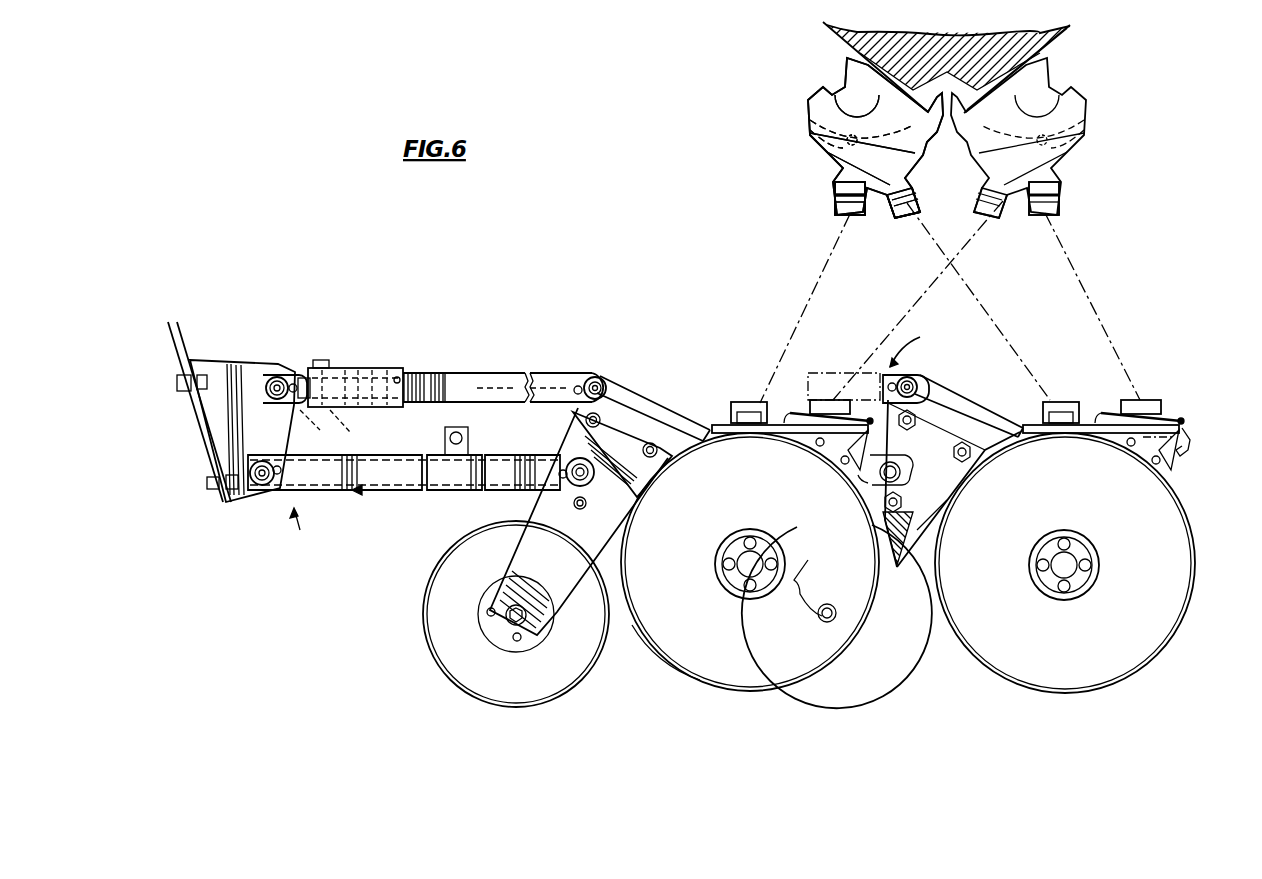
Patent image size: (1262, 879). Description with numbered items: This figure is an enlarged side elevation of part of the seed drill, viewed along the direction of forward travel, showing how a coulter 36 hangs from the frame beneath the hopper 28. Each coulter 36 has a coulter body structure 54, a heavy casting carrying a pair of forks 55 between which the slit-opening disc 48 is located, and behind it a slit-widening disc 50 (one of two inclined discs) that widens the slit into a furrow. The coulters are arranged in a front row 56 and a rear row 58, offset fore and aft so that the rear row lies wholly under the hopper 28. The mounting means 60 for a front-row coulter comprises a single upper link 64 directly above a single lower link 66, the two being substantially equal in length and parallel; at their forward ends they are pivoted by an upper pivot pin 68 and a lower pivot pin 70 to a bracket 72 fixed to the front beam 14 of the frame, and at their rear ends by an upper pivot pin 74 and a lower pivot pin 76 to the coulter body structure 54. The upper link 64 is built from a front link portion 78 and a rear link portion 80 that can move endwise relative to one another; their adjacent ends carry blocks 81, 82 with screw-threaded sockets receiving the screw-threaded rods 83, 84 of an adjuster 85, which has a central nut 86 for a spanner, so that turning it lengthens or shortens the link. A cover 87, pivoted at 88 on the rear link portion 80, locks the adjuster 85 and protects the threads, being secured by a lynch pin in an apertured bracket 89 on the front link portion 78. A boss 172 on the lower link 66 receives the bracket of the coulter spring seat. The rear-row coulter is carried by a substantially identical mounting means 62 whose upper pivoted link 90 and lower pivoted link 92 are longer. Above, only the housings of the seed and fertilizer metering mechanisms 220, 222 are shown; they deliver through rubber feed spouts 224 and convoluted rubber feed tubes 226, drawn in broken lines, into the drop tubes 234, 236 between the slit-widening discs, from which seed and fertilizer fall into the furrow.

The front beam 14 is at (184, 330).
The bracket 72 is at (218, 363).
The upper pivot pin 68 is at (278, 387).
The screw-threaded rod 83 is at (283, 408).
The apertured bracket 89 is at (312, 364).
The cover 87 is at (346, 368).
The central nut 86 is at (362, 368).
The block 82 is at (374, 368).
The adjuster 85 is at (390, 368).
The cover pivot 88 is at (400, 380).
The screw-threaded rod 84 is at (446, 373).
The upper link 64 is at (508, 372).
The upper pivot pin 74 is at (588, 380).
The lower pivot pin 70 is at (262, 482).
The front link portion 78 is at (294, 415).
The block 81 is at (341, 429).
The lower link 66 is at (354, 457).
The rear link portion 80 is at (442, 402).
The boss 172 is at (470, 434).
The lower pivot pin 76 is at (570, 468).
The mounting means 60 is at (341, 529).
The forks 55 is at (518, 514).
The coulter 36 is at (414, 628).
The slit-opening disc 48 is at (422, 652).
The coulter body structure 54 is at (662, 392).
The slit-widening disc 50 is at (708, 678).
The front row 56 is at (658, 678).
The rear row 58 is at (948, 680).
The seed drop tube 234 is at (728, 410).
The fertilizer drop tube 236 is at (803, 400).
The mounting means 62 is at (919, 344).
The upper pivoted link 90 is at (923, 375).
The lower pivoted link 92 is at (902, 464).
The hopper 28 is at (827, 25).
The seed metering mechanism 220 is at (800, 104).
The fertilizer metering mechanism 222 is at (1096, 106).
The rubber feed spout 224 is at (832, 172).
The convoluted rubber feed tube 226 is at (818, 301).